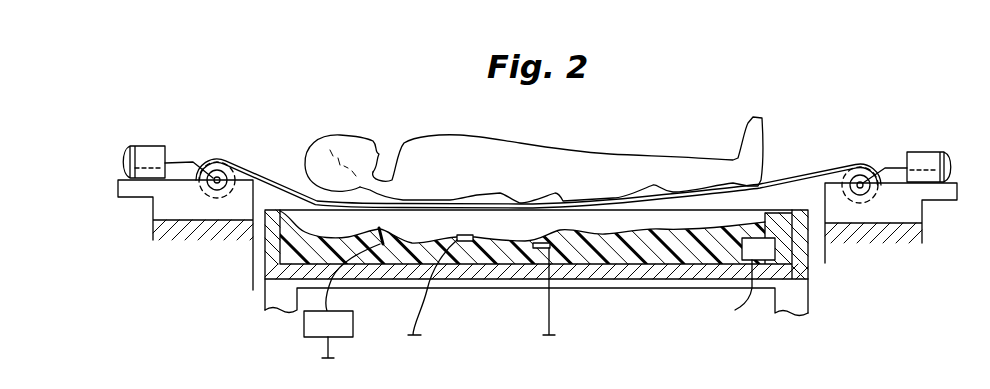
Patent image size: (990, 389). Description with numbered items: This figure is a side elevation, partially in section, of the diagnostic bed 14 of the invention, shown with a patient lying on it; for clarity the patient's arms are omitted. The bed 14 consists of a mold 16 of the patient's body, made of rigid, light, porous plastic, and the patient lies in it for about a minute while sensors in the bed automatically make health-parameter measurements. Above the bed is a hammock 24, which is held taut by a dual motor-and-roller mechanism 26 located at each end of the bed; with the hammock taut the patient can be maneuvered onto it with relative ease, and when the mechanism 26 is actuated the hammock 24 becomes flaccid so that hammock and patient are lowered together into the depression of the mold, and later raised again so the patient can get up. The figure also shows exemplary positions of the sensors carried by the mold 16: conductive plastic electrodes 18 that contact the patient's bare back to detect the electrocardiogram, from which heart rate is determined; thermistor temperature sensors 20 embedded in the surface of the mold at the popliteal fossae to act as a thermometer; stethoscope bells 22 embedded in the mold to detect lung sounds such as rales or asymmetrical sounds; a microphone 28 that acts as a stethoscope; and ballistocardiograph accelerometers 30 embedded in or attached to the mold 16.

The bed 14 is at (815, 285).
The mold 16 is at (659, 258).
The conductive plastic electrodes 18 is at (472, 244).
The thermistor temperature sensors 20 is at (556, 246).
The stethoscope bells 22 is at (384, 244).
The hammock 24 is at (268, 170).
The dual motor-and-roller mechanism 26 is at (183, 148).
The microphone 28 is at (347, 338).
The ballistocardiograph accelerometers 30 is at (743, 278).